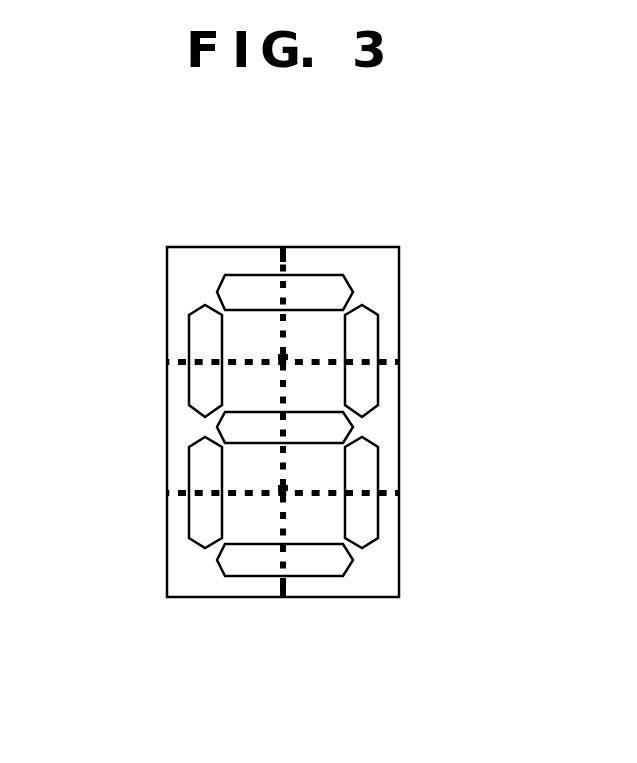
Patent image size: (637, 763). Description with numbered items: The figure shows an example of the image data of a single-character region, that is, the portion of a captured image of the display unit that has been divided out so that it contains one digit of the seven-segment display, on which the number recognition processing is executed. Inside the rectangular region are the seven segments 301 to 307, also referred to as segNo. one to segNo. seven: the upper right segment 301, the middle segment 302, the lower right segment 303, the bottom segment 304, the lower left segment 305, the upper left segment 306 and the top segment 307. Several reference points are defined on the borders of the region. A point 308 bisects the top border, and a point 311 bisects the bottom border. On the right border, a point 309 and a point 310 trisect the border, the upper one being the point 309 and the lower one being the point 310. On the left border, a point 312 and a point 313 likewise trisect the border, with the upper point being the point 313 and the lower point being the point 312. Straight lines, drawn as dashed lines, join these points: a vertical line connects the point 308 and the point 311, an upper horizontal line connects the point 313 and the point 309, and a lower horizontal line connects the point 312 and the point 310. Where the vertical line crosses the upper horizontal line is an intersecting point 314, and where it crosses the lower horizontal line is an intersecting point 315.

The segment 301 is at (368, 323).
The segment 302 is at (338, 432).
The segment 303 is at (368, 523).
The segment 304 is at (320, 555).
The segment 305 is at (200, 530).
The segment 306 is at (200, 325).
The segment 307 is at (237, 290).
The point 308 is at (283, 248).
The point 309 is at (398, 360).
The point 310 is at (398, 492).
The point 311 is at (283, 598).
The point 312 is at (167, 492).
The point 313 is at (167, 362).
The intersecting point 314 is at (285, 362).
The intersecting point 315 is at (283, 493).